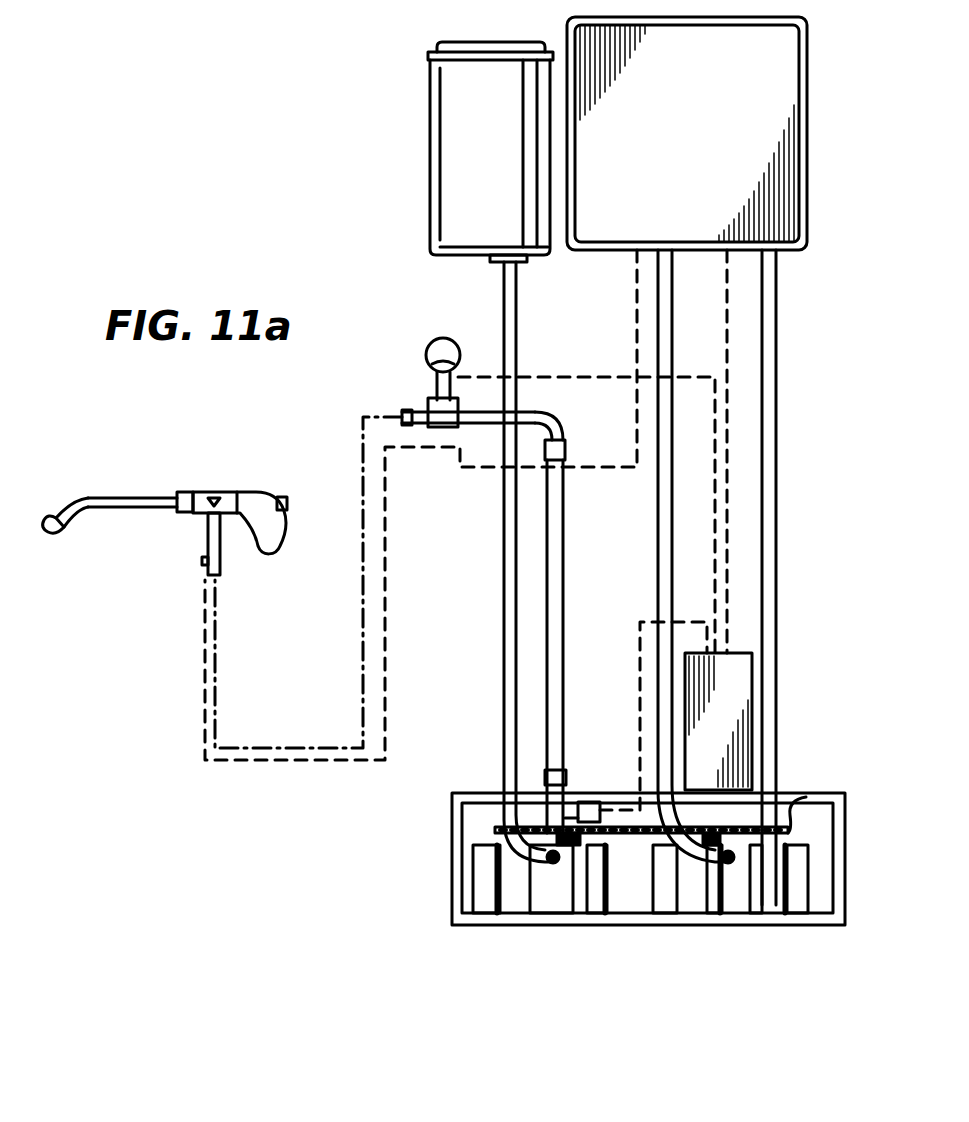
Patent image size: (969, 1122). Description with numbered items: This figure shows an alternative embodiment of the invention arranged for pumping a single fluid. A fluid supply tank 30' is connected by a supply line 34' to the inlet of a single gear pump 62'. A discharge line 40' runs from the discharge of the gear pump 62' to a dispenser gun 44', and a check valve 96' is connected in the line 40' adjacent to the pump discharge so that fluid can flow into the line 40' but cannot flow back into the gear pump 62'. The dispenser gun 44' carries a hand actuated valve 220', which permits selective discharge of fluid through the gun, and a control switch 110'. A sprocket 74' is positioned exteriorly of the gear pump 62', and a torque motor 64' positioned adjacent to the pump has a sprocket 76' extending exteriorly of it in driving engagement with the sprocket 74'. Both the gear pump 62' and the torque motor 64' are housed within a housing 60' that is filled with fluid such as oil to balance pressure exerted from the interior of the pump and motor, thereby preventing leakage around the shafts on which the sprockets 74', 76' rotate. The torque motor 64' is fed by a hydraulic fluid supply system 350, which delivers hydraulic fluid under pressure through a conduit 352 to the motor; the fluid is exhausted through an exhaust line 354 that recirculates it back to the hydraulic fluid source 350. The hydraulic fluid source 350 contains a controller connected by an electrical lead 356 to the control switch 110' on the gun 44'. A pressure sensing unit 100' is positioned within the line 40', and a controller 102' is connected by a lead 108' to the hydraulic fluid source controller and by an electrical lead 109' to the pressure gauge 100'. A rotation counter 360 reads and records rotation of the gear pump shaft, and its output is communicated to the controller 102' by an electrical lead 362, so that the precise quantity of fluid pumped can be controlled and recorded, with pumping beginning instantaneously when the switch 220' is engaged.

The fluid supply tank 30' is at (462, 152).
The supply line 34' is at (499, 562).
The pressure sensing unit 100' is at (462, 395).
The electrical lead 109' is at (586, 493).
The dispenser gun 44' is at (164, 508).
The hand actuated valve 220' is at (290, 473).
The control switch 110' is at (167, 571).
The discharge line 40' is at (588, 652).
The check valve 96' is at (514, 765).
The rotation counter 360 is at (588, 800).
The electrical lead 362 is at (640, 700).
The hydraulic fluid supply system 350 is at (702, 186).
The electrical lead 356 is at (637, 280).
The conduit 352 is at (658, 408).
The lead 108' is at (784, 451).
The exhaust line 354 is at (776, 370).
The controller 102' is at (768, 721).
The housing 60' is at (648, 888).
The gear pump 62' is at (540, 915).
The torque motor 64' is at (733, 911).
The sprocket 74' is at (595, 830).
The sprocket 76' is at (819, 797).